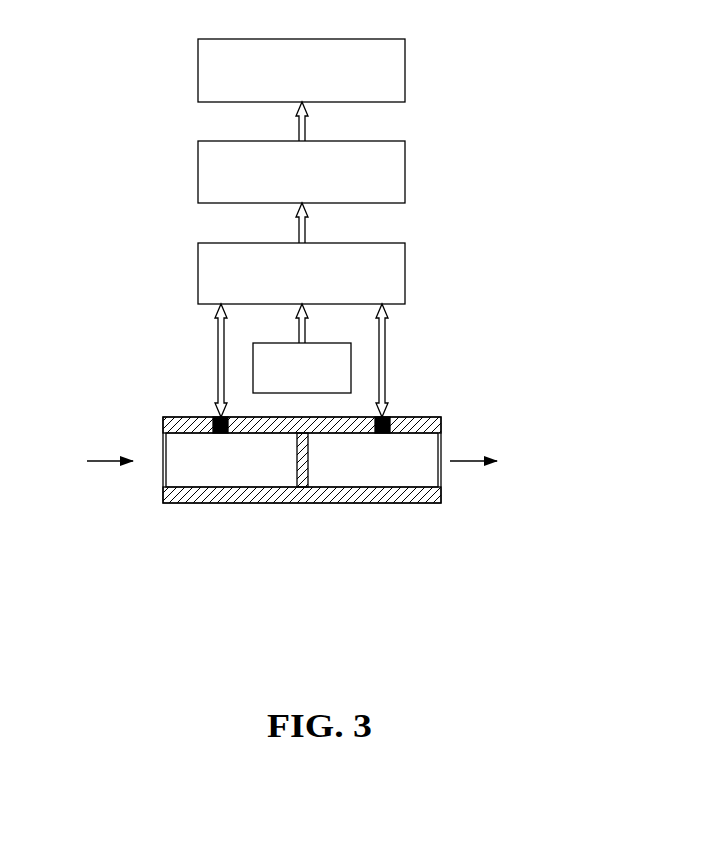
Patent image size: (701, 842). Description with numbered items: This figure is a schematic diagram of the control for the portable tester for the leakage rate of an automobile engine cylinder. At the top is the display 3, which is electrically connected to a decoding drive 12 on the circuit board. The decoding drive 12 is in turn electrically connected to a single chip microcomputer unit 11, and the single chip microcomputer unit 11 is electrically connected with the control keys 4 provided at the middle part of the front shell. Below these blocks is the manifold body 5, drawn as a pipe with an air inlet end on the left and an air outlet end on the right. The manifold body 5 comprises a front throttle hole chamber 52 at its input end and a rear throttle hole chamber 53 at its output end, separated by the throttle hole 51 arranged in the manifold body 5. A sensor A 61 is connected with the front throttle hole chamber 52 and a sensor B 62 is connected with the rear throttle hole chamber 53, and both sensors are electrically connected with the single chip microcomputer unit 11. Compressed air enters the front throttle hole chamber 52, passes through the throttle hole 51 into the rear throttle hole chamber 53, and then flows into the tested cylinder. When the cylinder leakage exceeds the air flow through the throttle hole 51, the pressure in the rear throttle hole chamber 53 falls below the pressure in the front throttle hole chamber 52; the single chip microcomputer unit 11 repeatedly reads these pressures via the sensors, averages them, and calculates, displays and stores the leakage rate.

The display 3 is at (323, 73).
The decoding drive 12 is at (327, 175).
The single chip microcomputer unit 11 is at (318, 274).
The control keys 4 is at (318, 370).
The sensor A 61 is at (214, 418).
The sensor B 62 is at (390, 418).
The manifold body 5 is at (195, 502).
The throttle hole 51 is at (300, 460).
The front throttle hole chamber 52 is at (184, 455).
The rear throttle hole chamber 53 is at (417, 448).